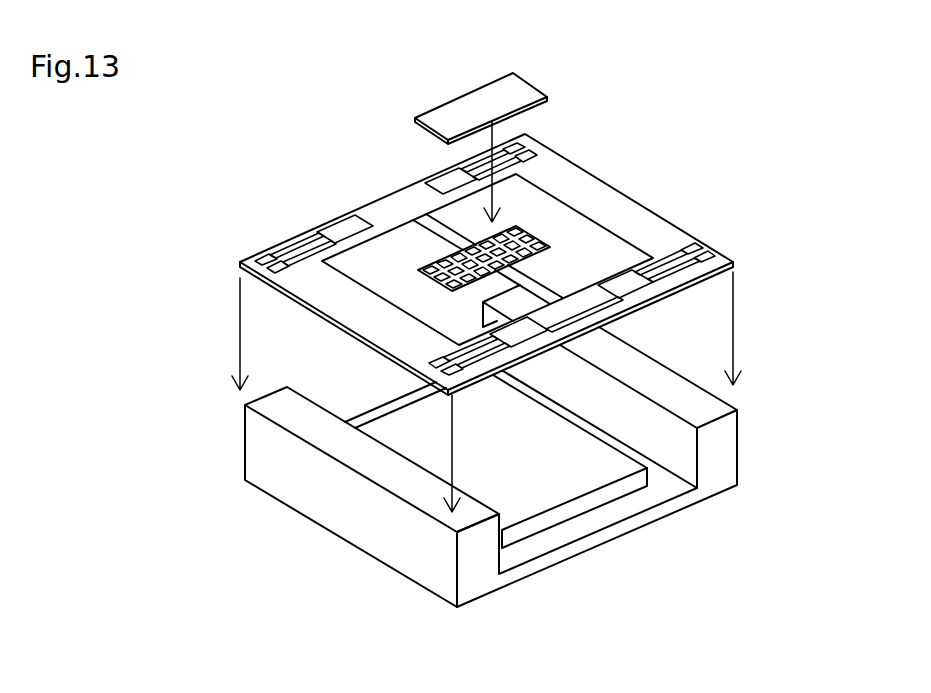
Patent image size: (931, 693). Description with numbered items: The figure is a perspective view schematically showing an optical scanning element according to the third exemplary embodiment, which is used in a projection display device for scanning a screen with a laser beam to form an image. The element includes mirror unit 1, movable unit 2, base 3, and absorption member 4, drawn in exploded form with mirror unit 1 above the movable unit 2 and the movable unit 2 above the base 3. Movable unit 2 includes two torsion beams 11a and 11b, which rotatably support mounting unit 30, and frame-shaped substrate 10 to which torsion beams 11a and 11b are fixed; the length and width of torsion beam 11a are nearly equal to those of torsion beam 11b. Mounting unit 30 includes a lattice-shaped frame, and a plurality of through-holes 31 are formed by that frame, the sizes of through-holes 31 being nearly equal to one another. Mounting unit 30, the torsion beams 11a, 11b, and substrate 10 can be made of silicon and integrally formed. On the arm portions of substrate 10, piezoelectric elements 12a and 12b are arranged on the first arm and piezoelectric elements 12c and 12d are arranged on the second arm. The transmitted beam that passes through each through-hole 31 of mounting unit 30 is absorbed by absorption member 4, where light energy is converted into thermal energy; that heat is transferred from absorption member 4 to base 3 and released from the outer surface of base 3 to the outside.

The mirror unit 1 is at (520, 77).
The movable unit 2 is at (689, 224).
The base 3 is at (317, 492).
The absorption member 4 is at (563, 490).
The substrate 10 is at (558, 167).
The torsion beam 11a is at (500, 278).
The torsion beam 11b is at (427, 233).
The piezoelectric element 12a is at (630, 290).
The piezoelectric element 12b is at (531, 326).
The piezoelectric element 12c is at (433, 178).
The piezoelectric element 12d is at (357, 223).
The mounting unit 30 is at (537, 235).
The through-hole 31 is at (530, 256).